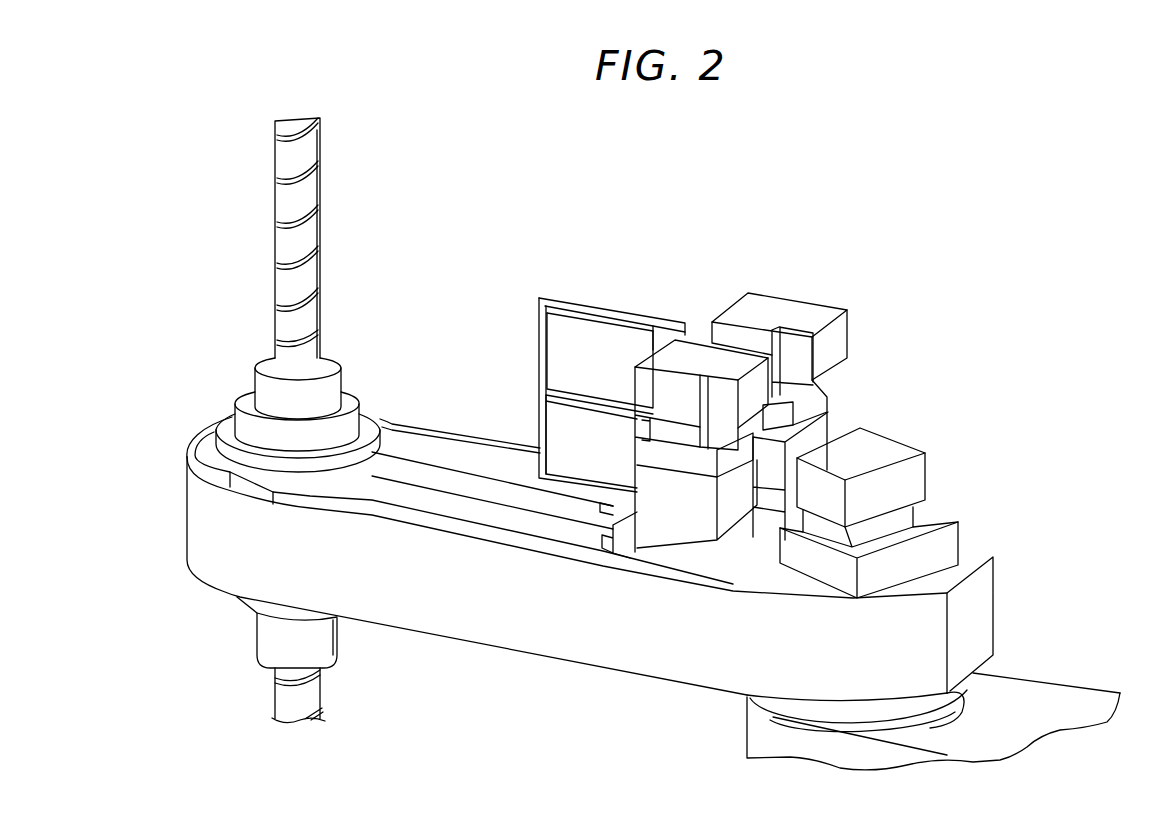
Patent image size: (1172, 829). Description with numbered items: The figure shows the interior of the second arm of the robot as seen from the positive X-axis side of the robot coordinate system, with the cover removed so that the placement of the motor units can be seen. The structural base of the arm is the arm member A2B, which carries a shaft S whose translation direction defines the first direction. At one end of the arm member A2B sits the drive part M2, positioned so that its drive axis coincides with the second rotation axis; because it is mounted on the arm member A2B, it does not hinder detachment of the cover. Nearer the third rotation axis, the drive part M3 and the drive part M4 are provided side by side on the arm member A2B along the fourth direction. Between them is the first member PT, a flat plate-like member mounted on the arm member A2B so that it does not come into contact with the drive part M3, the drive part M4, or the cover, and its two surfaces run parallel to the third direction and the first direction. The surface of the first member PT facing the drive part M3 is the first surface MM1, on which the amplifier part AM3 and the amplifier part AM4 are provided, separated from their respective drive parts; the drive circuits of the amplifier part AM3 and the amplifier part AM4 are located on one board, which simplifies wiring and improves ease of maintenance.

The shaft S is at (322, 312).
The arm member A2B is at (467, 643).
The first member PT is at (557, 293).
The amplifier part AM3 is at (553, 356).
The amplifier part AM4 is at (555, 412).
The first surface MM1 is at (672, 319).
The drive part M3 is at (670, 547).
The drive part M4 is at (823, 423).
The drive part M2 is at (950, 552).